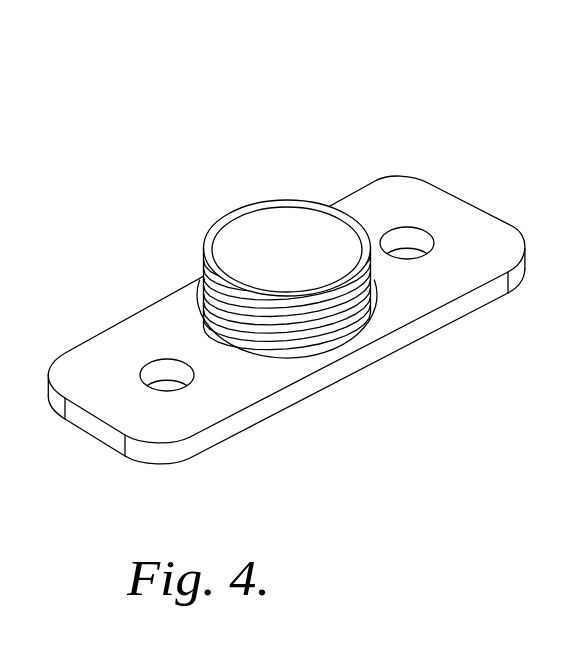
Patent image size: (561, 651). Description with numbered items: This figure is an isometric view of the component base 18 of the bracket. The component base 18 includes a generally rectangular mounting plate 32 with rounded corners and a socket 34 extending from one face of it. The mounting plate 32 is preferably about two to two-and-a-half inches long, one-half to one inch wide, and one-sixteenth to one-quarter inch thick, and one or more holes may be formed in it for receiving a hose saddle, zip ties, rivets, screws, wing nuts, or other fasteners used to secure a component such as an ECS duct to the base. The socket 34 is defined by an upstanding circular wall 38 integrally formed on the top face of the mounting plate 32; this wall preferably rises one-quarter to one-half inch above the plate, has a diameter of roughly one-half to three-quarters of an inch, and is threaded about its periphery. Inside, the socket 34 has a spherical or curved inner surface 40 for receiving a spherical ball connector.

The component base 18 is at (290, 260).
The mounting plate 32 is at (240, 390).
The socket 34 is at (269, 262).
The upstanding circular wall 38 is at (343, 323).
The inner surface 40 is at (285, 238).